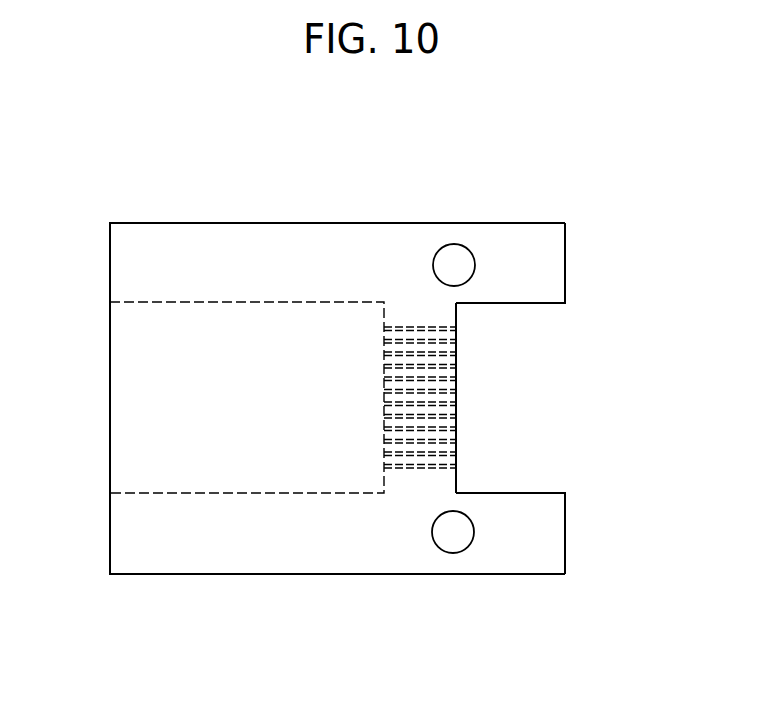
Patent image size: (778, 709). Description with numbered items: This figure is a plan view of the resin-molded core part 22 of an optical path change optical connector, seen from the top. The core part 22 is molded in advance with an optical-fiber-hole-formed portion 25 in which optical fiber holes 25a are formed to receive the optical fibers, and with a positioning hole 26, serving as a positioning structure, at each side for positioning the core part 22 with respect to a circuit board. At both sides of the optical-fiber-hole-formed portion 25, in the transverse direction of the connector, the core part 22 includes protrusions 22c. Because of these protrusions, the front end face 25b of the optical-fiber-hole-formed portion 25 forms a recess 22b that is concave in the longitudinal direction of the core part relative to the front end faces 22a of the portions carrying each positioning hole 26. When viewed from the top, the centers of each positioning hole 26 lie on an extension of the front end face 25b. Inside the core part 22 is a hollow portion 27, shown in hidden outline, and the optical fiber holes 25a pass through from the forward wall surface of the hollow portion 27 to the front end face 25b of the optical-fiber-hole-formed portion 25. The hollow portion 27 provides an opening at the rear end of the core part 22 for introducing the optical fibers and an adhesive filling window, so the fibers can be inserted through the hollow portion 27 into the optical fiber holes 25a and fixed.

The core part 22 is at (241, 242).
The front end faces 22a is at (565, 251).
The recess 22b is at (508, 392).
The protrusions 22c is at (532, 247).
The optical-fiber-hole-formed portion 25 is at (425, 398).
The optical fiber holes 25a is at (456, 327).
The front end face 25b is at (456, 433).
The positioning hole 26 is at (453, 263).
The hollow portion 27 is at (200, 302).